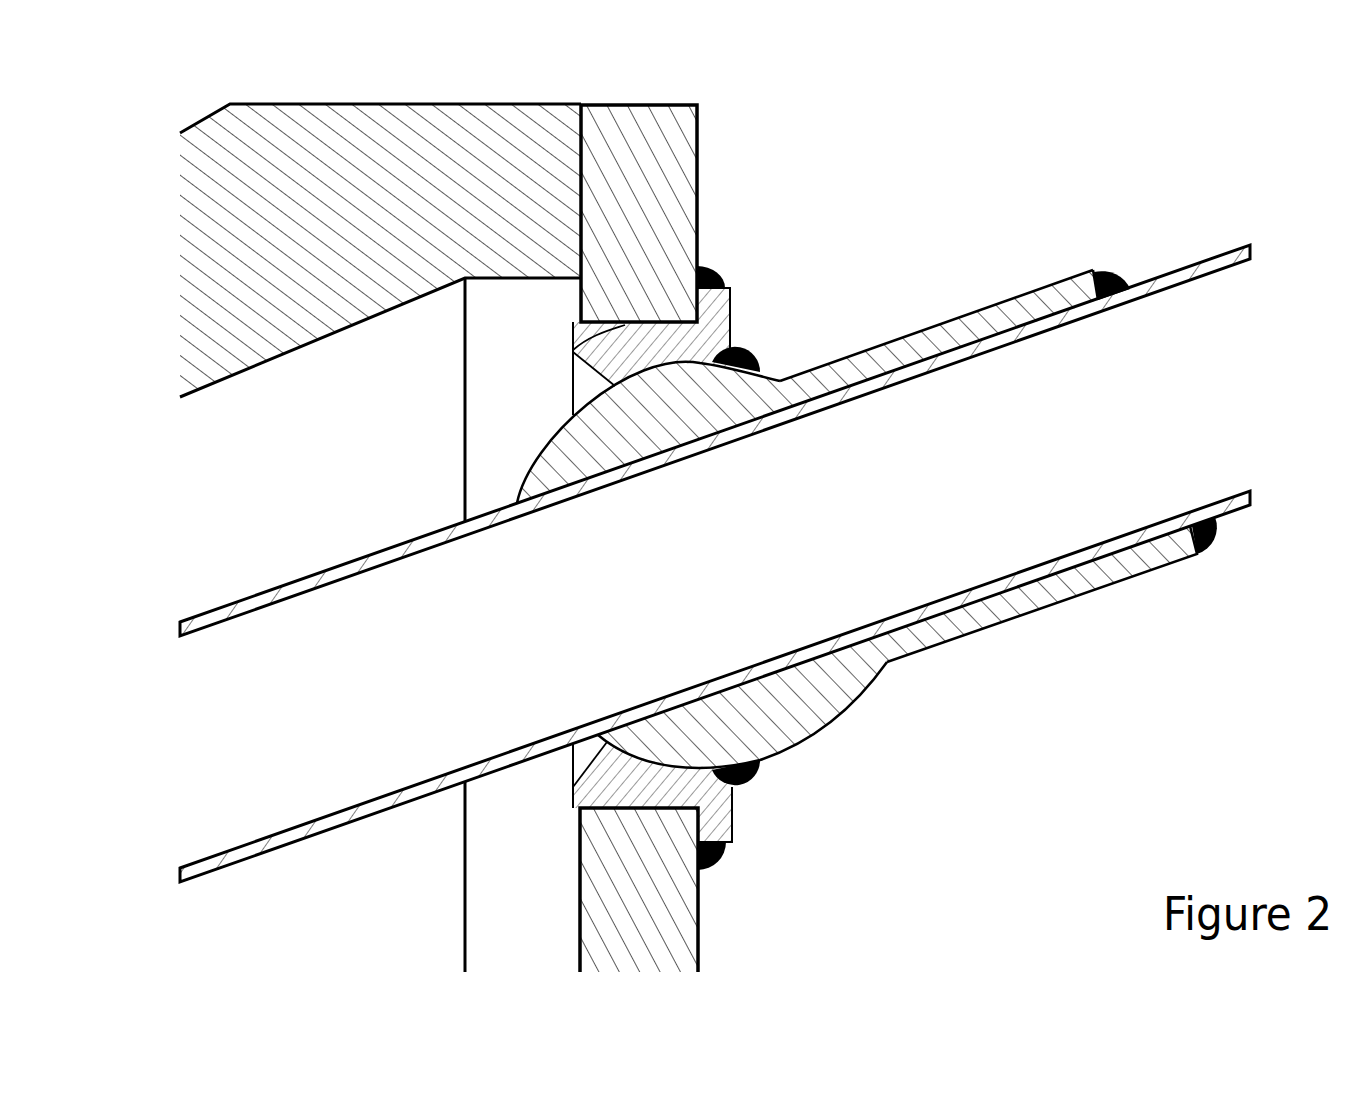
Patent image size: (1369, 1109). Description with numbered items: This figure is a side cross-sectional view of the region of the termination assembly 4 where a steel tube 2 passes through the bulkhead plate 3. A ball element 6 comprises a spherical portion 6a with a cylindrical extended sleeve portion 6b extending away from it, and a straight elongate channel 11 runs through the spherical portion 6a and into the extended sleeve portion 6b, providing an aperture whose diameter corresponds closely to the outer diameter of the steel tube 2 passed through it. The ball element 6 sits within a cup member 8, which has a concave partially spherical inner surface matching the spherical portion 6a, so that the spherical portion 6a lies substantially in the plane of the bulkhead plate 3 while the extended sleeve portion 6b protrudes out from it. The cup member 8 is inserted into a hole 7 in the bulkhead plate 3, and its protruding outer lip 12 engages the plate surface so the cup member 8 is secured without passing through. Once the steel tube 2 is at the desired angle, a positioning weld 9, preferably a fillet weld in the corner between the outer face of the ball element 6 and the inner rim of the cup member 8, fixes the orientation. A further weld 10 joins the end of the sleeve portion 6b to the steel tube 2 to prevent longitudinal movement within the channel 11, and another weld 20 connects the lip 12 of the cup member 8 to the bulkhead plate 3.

The steel tube 2 is at (1082, 555).
The bulkhead plate 3 is at (677, 178).
The termination assembly 4 is at (190, 110).
The ball element 6 is at (870, 740).
The spherical portion 6a is at (770, 738).
The extended sleeve portion 6b is at (939, 337).
The hole 7 is at (573, 350).
The cup member 8 is at (760, 837).
The positioning weld 9 is at (745, 343).
The weld 10 is at (1106, 272).
The channel 11 is at (877, 618).
The lip 12 is at (718, 315).
The weld 20 is at (710, 268).